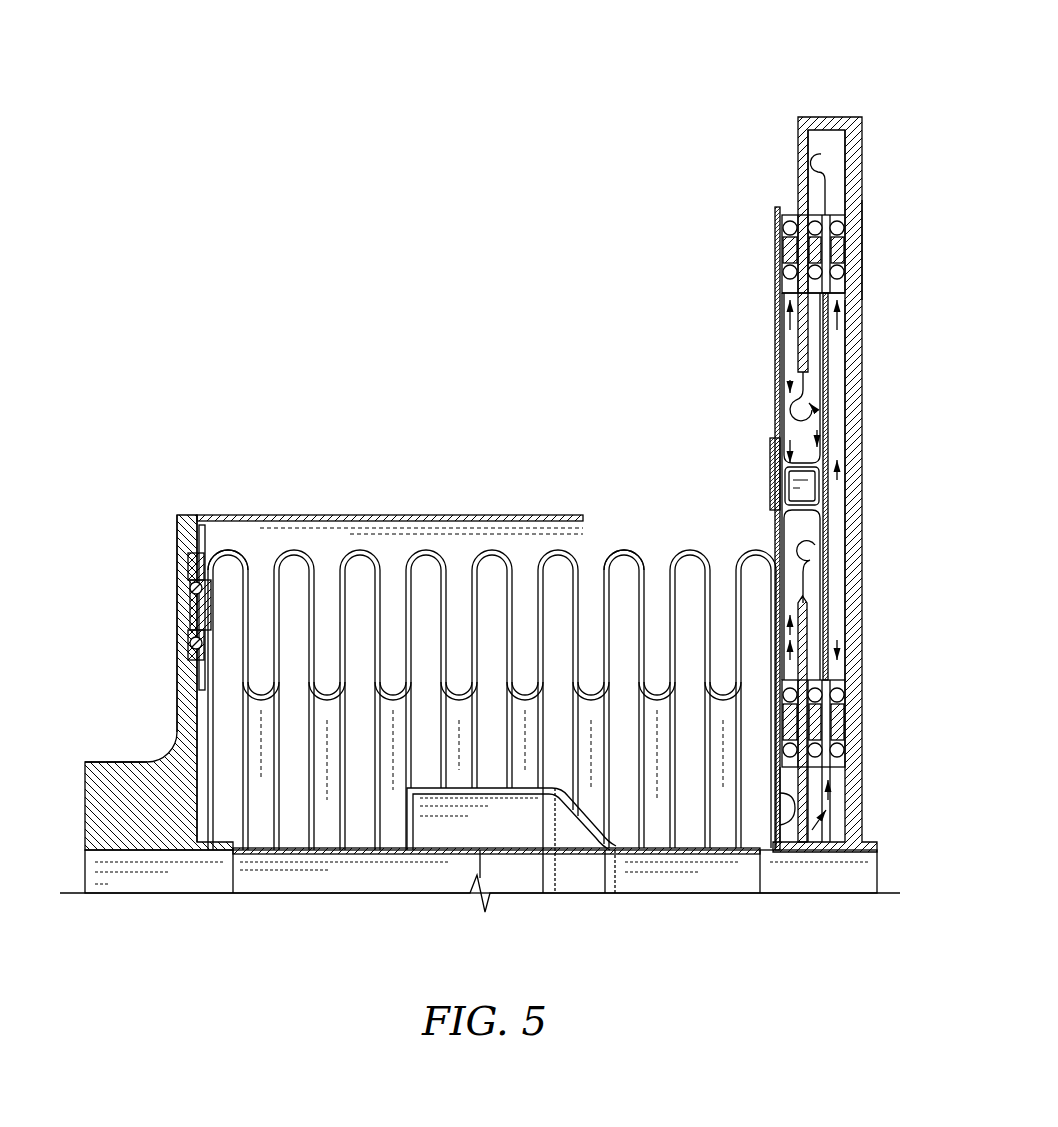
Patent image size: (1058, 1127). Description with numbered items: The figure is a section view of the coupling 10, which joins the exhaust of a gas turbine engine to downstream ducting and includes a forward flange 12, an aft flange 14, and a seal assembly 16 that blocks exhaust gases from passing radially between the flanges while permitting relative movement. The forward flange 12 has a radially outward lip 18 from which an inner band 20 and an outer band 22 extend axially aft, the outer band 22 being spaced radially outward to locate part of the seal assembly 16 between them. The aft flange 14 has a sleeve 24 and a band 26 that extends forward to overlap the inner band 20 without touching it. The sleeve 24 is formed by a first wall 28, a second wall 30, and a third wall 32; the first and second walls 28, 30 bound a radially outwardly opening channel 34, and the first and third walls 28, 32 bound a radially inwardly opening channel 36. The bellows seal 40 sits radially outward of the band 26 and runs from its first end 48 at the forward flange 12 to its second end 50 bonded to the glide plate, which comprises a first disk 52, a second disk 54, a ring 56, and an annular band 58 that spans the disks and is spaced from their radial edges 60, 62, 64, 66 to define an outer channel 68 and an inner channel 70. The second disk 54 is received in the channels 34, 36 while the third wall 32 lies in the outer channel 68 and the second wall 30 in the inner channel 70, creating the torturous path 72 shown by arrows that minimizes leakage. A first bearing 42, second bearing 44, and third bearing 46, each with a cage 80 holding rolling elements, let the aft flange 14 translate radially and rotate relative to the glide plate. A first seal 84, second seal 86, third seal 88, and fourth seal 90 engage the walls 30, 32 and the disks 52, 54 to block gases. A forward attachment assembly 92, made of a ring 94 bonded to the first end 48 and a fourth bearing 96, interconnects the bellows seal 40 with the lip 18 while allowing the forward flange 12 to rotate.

The coupling 10 is at (385, 255).
The forward flange 12 is at (95, 478).
The aft flange 14 is at (768, 92).
The seal assembly 16 is at (612, 382).
The lip 18 is at (88, 757).
The inner band 20 is at (268, 878).
The outer band 22 is at (290, 510).
The sleeve 24 is at (895, 135).
The band 26 is at (655, 868).
The first wall 28 is at (863, 470).
The second wall 30 is at (812, 817).
The third wall 32 is at (777, 293).
The radially outwardly opening channel 34 is at (863, 652).
The radially inwardly opening channel 36 is at (863, 250).
The bellows seal 40 is at (612, 540).
The first bearing 42 is at (788, 210).
The second bearing 44 is at (802, 196).
The third bearing 46 is at (848, 217).
The first end 48 is at (210, 537).
The second end 50 is at (783, 492).
The first disk 52 is at (775, 332).
The second disk 54 is at (847, 360).
The ring 56 is at (768, 470).
The annular band 58 is at (790, 438).
The inner radial edge 60 is at (770, 772).
The outer radial edge 62 is at (832, 790).
The radial inner edge 64 is at (777, 212).
The radial outer edge 66 is at (845, 202).
The outer channel 68 is at (818, 382).
The inner channel 70 is at (830, 540).
The torturous path 72 is at (828, 360).
The cage 80 is at (847, 750).
The first seal 84 is at (795, 840).
The second seal 86 is at (835, 557).
The third seal 88 is at (823, 130).
The fourth seal 90 is at (788, 393).
The forward attachment assembly 92 is at (180, 515).
The ring 94 is at (185, 598).
The fourth bearing 96 is at (185, 638).